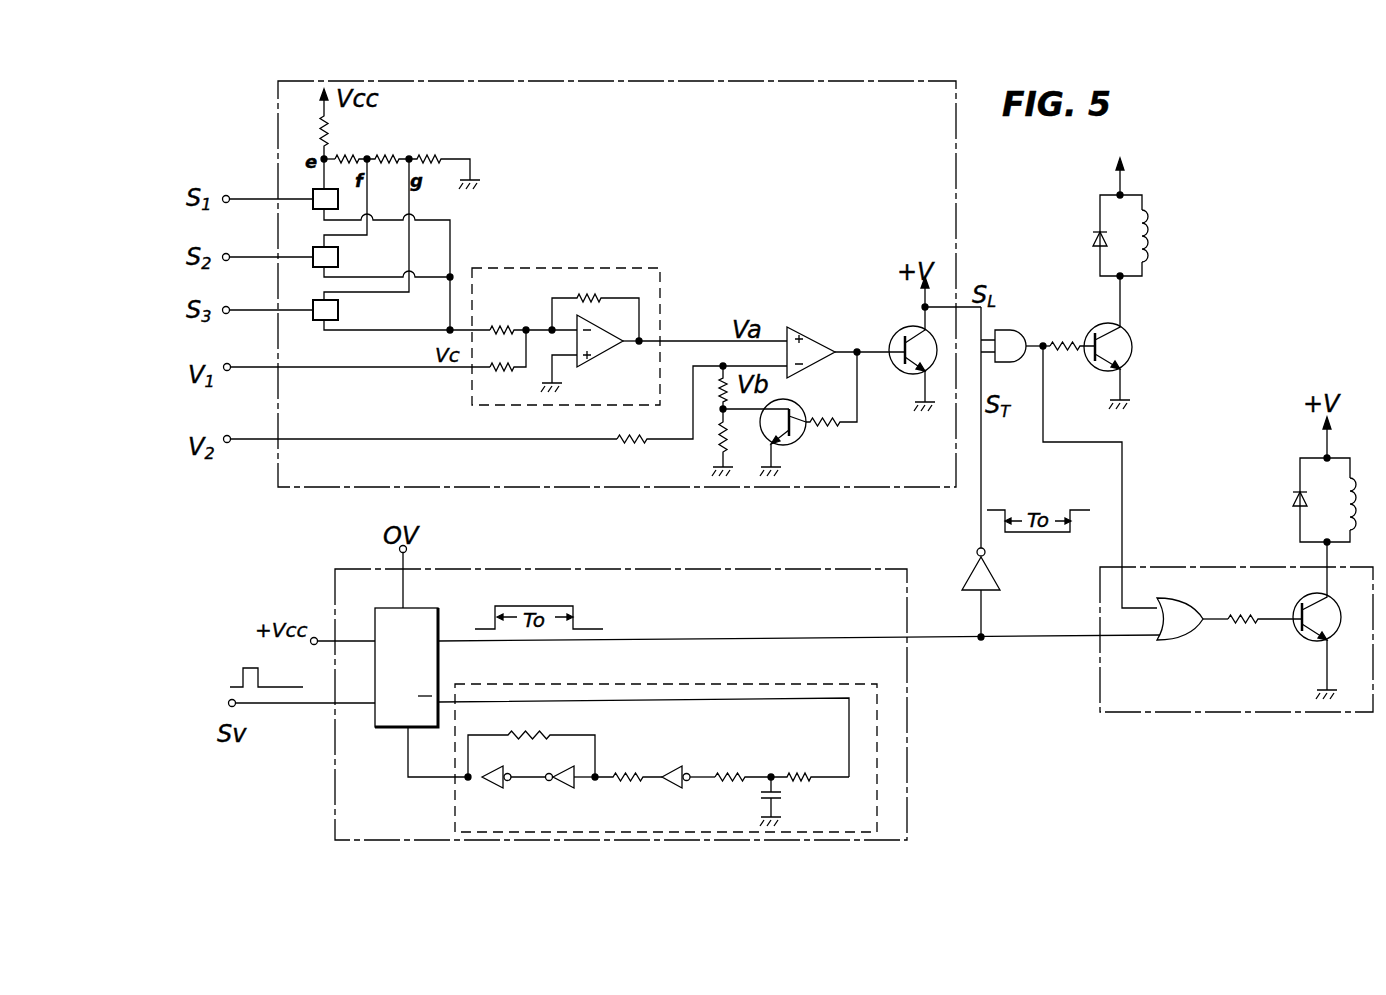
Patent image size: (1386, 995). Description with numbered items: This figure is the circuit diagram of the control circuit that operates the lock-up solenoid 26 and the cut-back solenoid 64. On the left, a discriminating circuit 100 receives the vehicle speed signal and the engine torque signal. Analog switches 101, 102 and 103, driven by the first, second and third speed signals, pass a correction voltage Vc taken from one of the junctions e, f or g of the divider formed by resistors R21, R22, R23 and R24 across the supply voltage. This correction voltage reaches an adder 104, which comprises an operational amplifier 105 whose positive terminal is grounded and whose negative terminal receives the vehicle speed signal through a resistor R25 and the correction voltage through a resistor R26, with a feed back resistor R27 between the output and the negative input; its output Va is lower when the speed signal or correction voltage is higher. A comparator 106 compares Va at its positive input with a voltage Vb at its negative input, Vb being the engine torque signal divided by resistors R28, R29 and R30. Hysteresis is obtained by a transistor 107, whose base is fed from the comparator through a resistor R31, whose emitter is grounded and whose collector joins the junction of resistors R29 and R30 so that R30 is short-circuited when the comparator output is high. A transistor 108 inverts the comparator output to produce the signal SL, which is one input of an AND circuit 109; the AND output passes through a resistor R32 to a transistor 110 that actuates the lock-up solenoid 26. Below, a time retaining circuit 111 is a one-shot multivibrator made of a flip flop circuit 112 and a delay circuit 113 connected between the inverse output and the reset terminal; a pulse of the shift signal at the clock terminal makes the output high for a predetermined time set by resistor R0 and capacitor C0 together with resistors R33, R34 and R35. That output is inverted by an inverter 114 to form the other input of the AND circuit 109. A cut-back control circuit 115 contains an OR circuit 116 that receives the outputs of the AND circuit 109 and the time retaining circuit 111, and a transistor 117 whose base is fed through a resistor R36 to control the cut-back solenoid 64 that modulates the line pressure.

The discriminating circuit 100 is at (956, 199).
The analog switch 101 is at (313, 193).
The analog switch 102 is at (313, 252).
The analog switch 103 is at (313, 305).
The adder 104 is at (660, 283).
The operational amplifier 105 is at (592, 355).
The comparator 106 is at (815, 338).
The transistor 107 is at (800, 441).
The transistor 108 is at (892, 336).
The AND circuit 109 is at (1040, 321).
The transistor 110 is at (1132, 341).
The time retaining circuit 111 is at (794, 566).
The flip flop circuit 112 is at (440, 673).
The delay circuit 113 is at (643, 684).
The inverter 114 is at (997, 576).
The cut-back control circuit 115 is at (1220, 566).
The OR circuit 116 is at (1173, 598).
The transistor 117 is at (1293, 633).
The lock-up solenoid 26 is at (1148, 243).
The cut-back solenoid 64 is at (1333, 481).
The resistor R21 is at (321, 129).
The resistor R22 is at (350, 156).
The resistor R23 is at (398, 156).
The resistor R24 is at (447, 156).
The resistor R25 is at (503, 370).
The resistor R26 is at (491, 330).
The feed back resistor R27 is at (589, 296).
The resistor R28 is at (628, 443).
The resistor R29 is at (720, 376).
The resistor R30 is at (718, 452).
The resistor R31 is at (820, 418).
The resistor R32 is at (1062, 352).
The resistor R33 is at (724, 774).
The resistor R34 is at (628, 774).
The resistor R35 is at (513, 733).
The resistor R36 is at (1245, 615).
The resistor R0 is at (805, 774).
The capacitor C0 is at (786, 800).